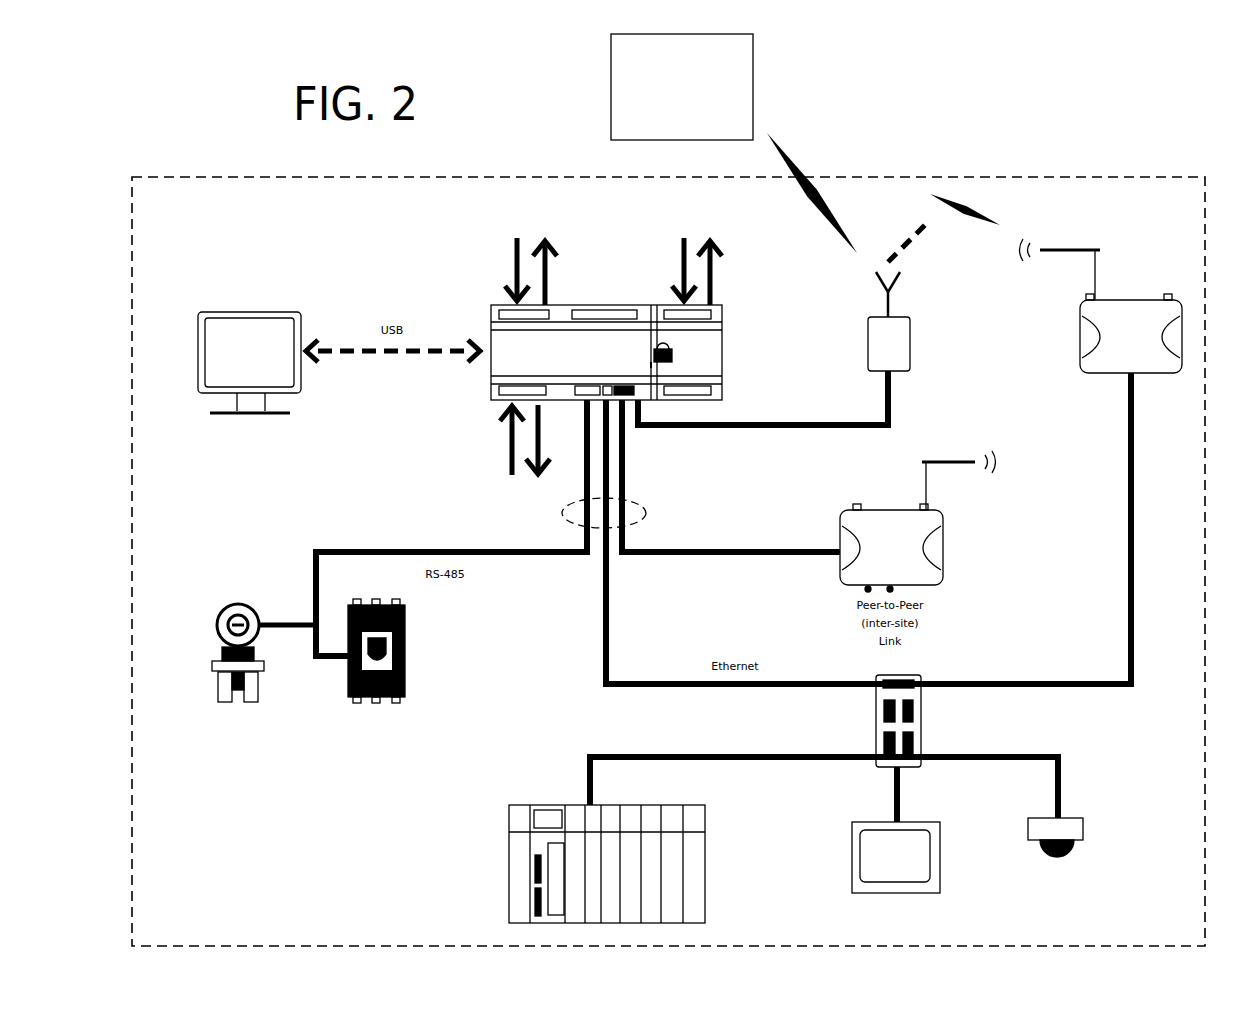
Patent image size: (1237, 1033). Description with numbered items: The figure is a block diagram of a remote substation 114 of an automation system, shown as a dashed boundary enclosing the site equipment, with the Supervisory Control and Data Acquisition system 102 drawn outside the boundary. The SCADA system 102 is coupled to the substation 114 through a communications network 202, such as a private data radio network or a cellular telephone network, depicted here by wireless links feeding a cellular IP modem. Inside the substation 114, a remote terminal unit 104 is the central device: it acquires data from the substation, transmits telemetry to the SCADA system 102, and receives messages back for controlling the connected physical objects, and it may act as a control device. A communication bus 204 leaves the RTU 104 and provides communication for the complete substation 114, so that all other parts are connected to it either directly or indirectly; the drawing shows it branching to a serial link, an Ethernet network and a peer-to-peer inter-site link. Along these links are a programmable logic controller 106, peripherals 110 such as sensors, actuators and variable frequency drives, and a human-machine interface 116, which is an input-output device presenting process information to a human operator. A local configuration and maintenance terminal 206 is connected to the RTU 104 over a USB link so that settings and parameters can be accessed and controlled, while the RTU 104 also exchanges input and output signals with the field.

The Supervisory Control and Data Acquisition (SCADA) system 102 is at (753, 72).
The remote terminal unit (RTU) 104 is at (614, 306).
The programmable logic controller (PLC) 106 is at (705, 850).
The peripheral 110 is at (280, 765).
The remote substation 114 is at (947, 177).
The human-machine interface (HMI) 116 is at (940, 858).
The communications network 202 is at (868, 330).
The communication bus 204 is at (645, 514).
The local configuration / maintenance terminal 206 is at (258, 312).